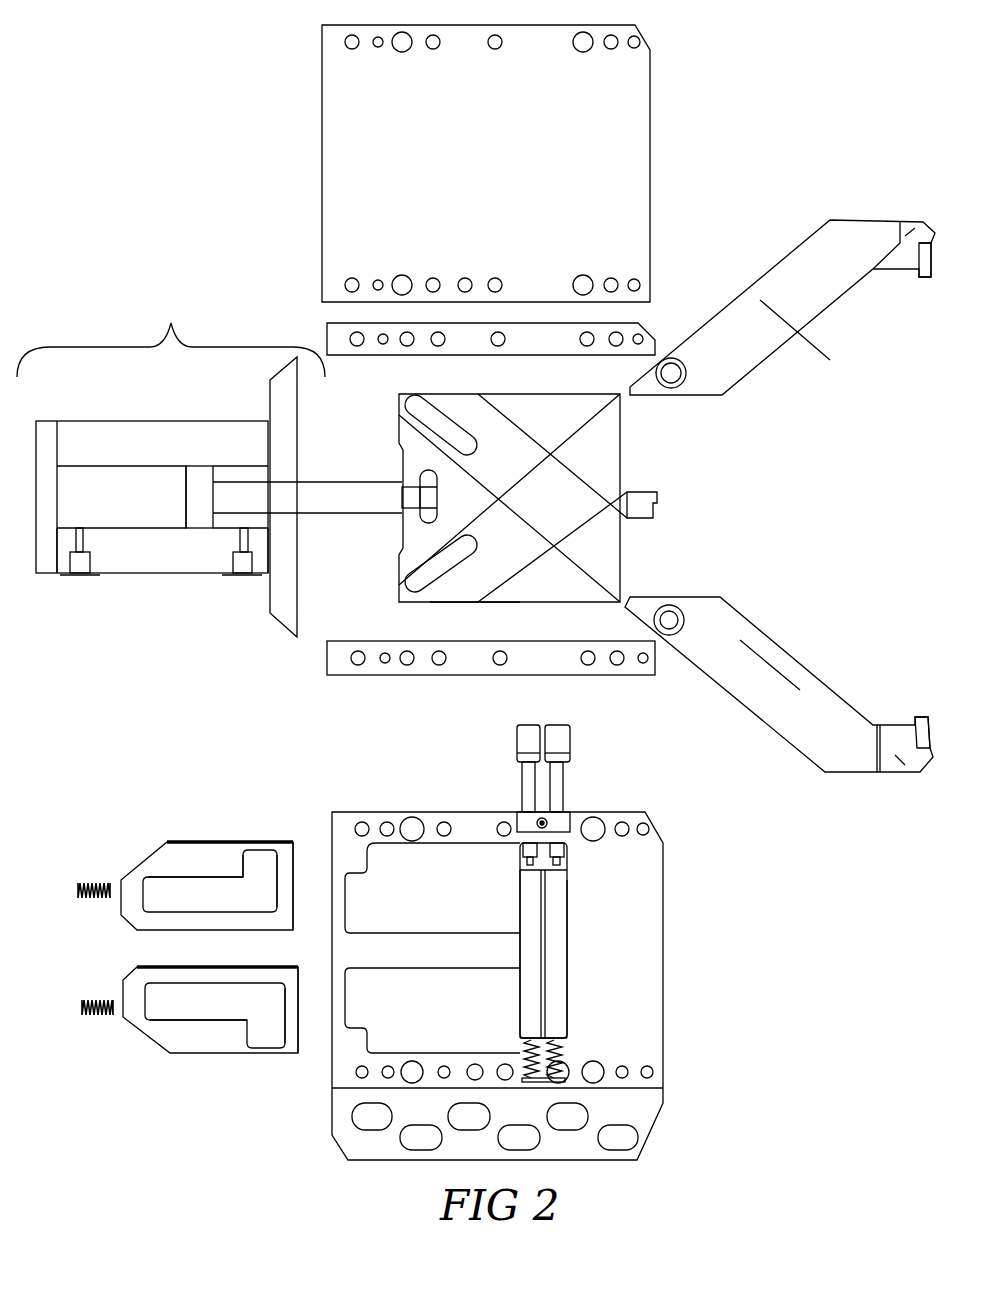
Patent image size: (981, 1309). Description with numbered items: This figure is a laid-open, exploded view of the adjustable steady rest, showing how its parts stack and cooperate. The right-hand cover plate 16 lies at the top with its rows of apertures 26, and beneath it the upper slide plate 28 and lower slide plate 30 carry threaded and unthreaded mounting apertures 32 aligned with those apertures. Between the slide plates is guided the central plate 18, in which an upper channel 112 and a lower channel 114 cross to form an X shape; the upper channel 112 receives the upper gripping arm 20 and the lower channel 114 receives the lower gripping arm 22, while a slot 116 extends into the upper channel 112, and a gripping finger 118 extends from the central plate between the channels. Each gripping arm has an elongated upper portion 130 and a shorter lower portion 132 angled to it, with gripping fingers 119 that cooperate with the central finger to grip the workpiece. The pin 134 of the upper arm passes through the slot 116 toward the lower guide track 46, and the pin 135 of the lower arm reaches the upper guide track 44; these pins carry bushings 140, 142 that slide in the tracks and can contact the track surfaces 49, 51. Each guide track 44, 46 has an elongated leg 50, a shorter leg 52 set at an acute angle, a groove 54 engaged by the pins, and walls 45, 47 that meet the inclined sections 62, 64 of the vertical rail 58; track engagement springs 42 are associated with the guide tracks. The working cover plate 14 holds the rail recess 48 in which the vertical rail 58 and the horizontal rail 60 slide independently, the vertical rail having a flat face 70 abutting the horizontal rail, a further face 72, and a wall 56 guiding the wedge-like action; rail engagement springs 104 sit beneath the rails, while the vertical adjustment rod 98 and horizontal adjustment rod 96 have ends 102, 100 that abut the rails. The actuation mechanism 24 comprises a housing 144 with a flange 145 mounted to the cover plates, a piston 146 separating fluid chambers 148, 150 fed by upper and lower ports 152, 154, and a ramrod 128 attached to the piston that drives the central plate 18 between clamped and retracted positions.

The working cover plate 14 is at (330, 808).
The right-hand cover plate 16 is at (650, 172).
The central plate 18 is at (658, 520).
The upper gripping arm 20 is at (767, 363).
The lower gripping arm 22 is at (770, 635).
The cylinder/piston actuation mechanism 24 is at (171, 438).
The apertures 26 is at (622, 35).
The upper slide plate 28 is at (327, 323).
The lower slide plate 30 is at (327, 677).
The mounting apertures 32 is at (625, 333).
The spring 42 is at (97, 883).
The upper guide track 44 is at (207, 886).
The wall of upper guide track 45 is at (297, 890).
The lower guide track 46 is at (210, 1010).
The wall of lower guide track 47 is at (307, 1005).
The rail recess 48 is at (567, 873).
The surface of upper guide track 49 is at (278, 880).
The elongated leg 50 is at (187, 892).
The surface of lower guide track 51 is at (282, 1018).
The shorter leg 52 is at (267, 860).
The groove 54 is at (182, 1022).
The wall 56 is at (540, 939).
The vertical rail 58 is at (533, 930).
The horizontal rail 60 is at (555, 960).
The inclined section 62 is at (517, 908).
The inclined section 64 is at (517, 1015).
The flat face 70 is at (538, 1000).
The valve chamber lower wall 72 is at (562, 1010).
The horizontal adjustment rod 96 is at (557, 793).
The vertical adjustment rod 98 is at (527, 793).
The end of horizontal adjustment rod 100 is at (543, 850).
The end of vertical adjustment rod 102 is at (523, 865).
The rail engagement springs 104 is at (562, 1057).
The upper channel 112 is at (467, 582).
The lower channel 114 is at (459, 407).
The slot 116 is at (432, 568).
The gripping finger 118 is at (663, 492).
The gripping fingers 119 is at (925, 280).
The ramrod 128 is at (340, 502).
The elongated upper portion 130 is at (783, 310).
The shorter lower portion 132 is at (910, 232).
The pin 134 is at (672, 373).
The pin 135 is at (671, 618).
The bushing 140 is at (688, 620).
The bushing 142 is at (688, 380).
The housing 144 is at (183, 555).
The flange 145 is at (283, 615).
The piston 146 is at (197, 487).
The fluid chamber 148 is at (143, 495).
The fluid chamber 150 is at (245, 470).
The upper port 152 is at (80, 563).
The lower port 154 is at (242, 563).